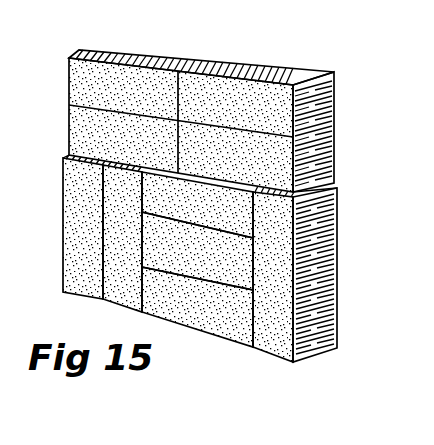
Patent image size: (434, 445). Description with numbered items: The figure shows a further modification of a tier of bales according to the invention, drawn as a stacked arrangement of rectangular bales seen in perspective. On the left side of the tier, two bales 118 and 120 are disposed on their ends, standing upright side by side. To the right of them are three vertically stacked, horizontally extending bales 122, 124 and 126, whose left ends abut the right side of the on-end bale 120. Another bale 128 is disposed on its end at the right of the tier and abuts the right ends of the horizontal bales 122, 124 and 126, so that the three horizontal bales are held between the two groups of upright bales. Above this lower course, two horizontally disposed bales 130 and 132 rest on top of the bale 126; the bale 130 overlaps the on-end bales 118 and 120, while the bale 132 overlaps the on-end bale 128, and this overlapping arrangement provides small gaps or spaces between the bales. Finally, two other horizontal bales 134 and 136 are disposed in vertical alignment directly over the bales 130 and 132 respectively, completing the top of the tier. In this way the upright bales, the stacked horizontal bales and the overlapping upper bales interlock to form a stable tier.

The bale 118 is at (72, 222).
The bale 120 is at (115, 193).
The bale 122 is at (213, 335).
The bale 124 is at (197, 251).
The bale 126 is at (197, 205).
The bale 128 is at (332, 265).
The bale 130 is at (88, 130).
The bale 132 is at (326, 150).
The bale 134 is at (104, 53).
The bale 136 is at (225, 65).